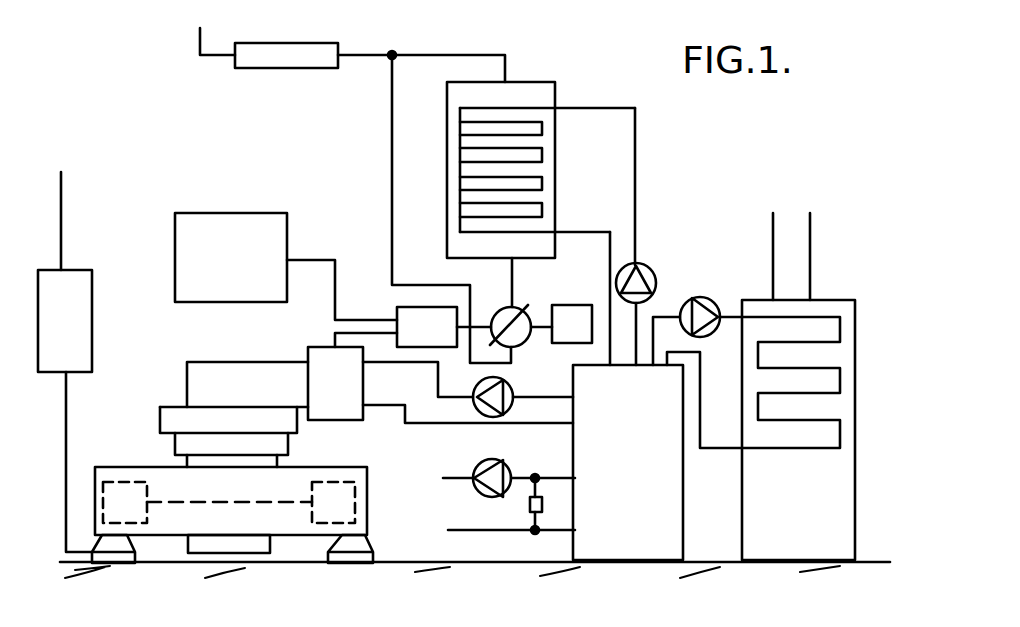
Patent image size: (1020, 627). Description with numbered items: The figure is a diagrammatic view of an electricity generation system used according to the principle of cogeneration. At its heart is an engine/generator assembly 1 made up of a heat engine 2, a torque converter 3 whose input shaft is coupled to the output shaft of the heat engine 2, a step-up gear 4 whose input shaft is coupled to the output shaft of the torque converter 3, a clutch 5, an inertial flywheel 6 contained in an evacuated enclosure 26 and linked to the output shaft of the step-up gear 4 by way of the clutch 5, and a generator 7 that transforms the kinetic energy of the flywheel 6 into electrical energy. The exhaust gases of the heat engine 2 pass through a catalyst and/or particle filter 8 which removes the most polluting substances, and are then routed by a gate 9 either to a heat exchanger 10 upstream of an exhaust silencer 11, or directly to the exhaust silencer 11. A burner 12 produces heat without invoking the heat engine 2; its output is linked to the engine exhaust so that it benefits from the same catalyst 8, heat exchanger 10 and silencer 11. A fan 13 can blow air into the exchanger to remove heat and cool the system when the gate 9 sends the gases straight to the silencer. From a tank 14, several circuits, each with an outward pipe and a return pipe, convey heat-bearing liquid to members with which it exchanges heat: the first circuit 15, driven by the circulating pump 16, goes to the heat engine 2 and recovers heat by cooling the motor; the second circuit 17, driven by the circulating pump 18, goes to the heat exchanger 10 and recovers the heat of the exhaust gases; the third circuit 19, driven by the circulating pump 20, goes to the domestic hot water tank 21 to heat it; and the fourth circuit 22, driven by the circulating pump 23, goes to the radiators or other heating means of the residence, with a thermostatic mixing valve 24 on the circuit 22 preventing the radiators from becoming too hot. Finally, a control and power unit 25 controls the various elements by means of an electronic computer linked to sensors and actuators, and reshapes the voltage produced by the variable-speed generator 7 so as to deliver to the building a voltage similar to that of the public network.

The engine/generator assembly 1 is at (187, 341).
The heat engine 2 is at (200, 382).
The torque converter 3 is at (175, 422).
The step-up gear 4 is at (178, 448).
The clutch 5 is at (253, 460).
The inertial flywheel 6 is at (320, 513).
The generator 7 is at (242, 547).
The catalyst and/or particle filter 8 is at (403, 318).
The gate 9 is at (513, 313).
The heat exchanger 10 is at (523, 93).
The exhaust silencer 11 is at (277, 60).
The burner 12 is at (237, 223).
The fan 13 is at (567, 313).
The tank 14 is at (663, 475).
The first circuit 15 is at (447, 397).
The circulating pump 16 is at (493, 393).
The second circuit 17 is at (585, 228).
The circulating pump 18 is at (640, 280).
The third circuit 19 is at (735, 320).
The circulating pump 20 is at (703, 312).
The domestic hot water tank 21 is at (837, 358).
The fourth circuit 22 is at (468, 530).
The circulating pump 23 is at (480, 470).
The thermostatic mixing valve 24 is at (528, 505).
The control and power unit 25 is at (75, 287).
The evacuated enclosure 26 is at (163, 477).